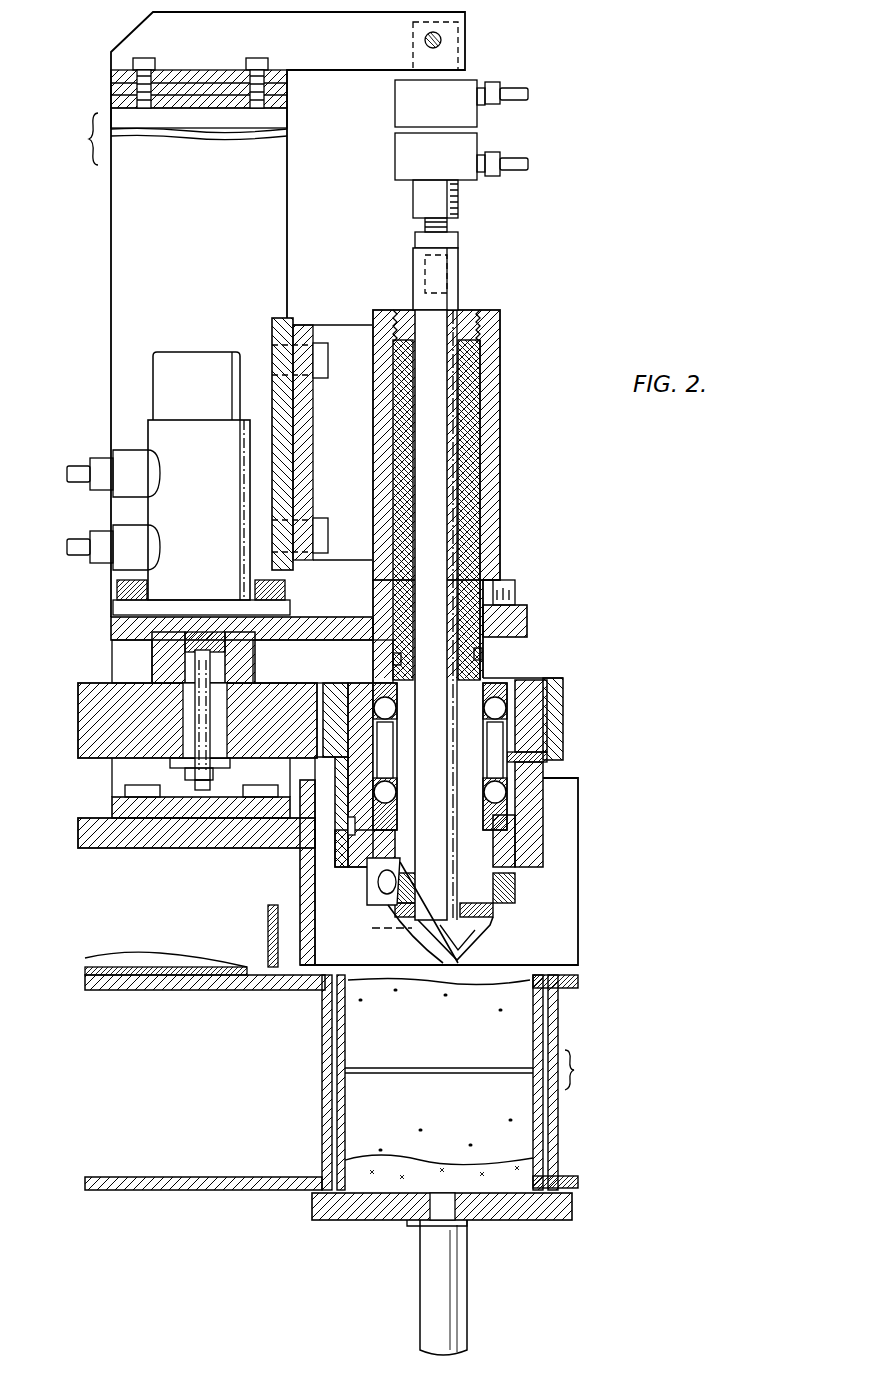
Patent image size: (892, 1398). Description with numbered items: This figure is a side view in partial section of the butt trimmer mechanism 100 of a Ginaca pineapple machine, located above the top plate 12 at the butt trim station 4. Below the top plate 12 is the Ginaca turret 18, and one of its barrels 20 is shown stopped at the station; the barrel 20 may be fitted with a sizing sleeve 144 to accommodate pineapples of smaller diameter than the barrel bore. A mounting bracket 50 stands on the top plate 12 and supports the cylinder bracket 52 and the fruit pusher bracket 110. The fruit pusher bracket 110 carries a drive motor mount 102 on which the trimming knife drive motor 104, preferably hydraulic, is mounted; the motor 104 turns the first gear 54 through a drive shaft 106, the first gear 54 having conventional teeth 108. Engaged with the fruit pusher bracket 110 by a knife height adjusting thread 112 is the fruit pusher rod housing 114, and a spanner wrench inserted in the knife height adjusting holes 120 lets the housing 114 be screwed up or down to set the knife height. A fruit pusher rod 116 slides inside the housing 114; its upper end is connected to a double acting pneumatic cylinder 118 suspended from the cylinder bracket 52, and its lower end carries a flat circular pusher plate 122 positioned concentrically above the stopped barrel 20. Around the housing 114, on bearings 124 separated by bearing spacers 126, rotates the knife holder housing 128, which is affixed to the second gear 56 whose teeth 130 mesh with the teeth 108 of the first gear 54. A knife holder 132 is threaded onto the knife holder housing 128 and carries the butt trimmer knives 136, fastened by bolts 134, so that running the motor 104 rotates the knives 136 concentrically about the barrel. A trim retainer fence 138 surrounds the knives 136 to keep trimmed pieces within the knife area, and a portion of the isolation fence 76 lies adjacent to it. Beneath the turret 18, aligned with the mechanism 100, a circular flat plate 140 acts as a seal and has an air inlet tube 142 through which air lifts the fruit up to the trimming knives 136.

The butt trim station 4 is at (287, 1221).
The top plate 12 is at (78, 838).
The Ginaca turret 18 is at (202, 993).
The barrel 20 is at (548, 1105).
The mounting bracket 50 is at (111, 256).
The cylinder bracket 52 is at (465, 14).
The first gear 54 is at (100, 757).
The second gear 56 is at (545, 682).
The isolation fence 76 is at (268, 935).
The butt trimmer mechanism 100 is at (640, 520).
The drive motor mount 102 is at (111, 627).
The trimming knife drive motor 104 is at (153, 432).
The drive shaft 106 is at (180, 660).
The teeth 108 is at (78, 722).
The fruit pusher bracket 110 is at (493, 440).
The knife height adjusting thread 112 is at (490, 350).
The fruit pusher rod housing 114 is at (472, 545).
The fruit pusher rod 116 is at (440, 573).
The double acting pneumatic cylinder 118 is at (477, 141).
The knife height adjusting holes 120 is at (393, 657).
The pusher plate 122 is at (500, 918).
The bearings 124 is at (505, 793).
The bearing spacers 126 is at (545, 762).
The knife holder housing 128 is at (535, 840).
The teeth 130 is at (563, 712).
The knife holder 132 is at (518, 878).
The bolts 134 is at (385, 893).
The butt trimmer knives 136 is at (462, 963).
The trim retainer fence 138 is at (300, 880).
The circular flat plate 140 is at (555, 1205).
The air inlet tube 142 is at (467, 1284).
The sizing sleeve 144 is at (538, 1022).